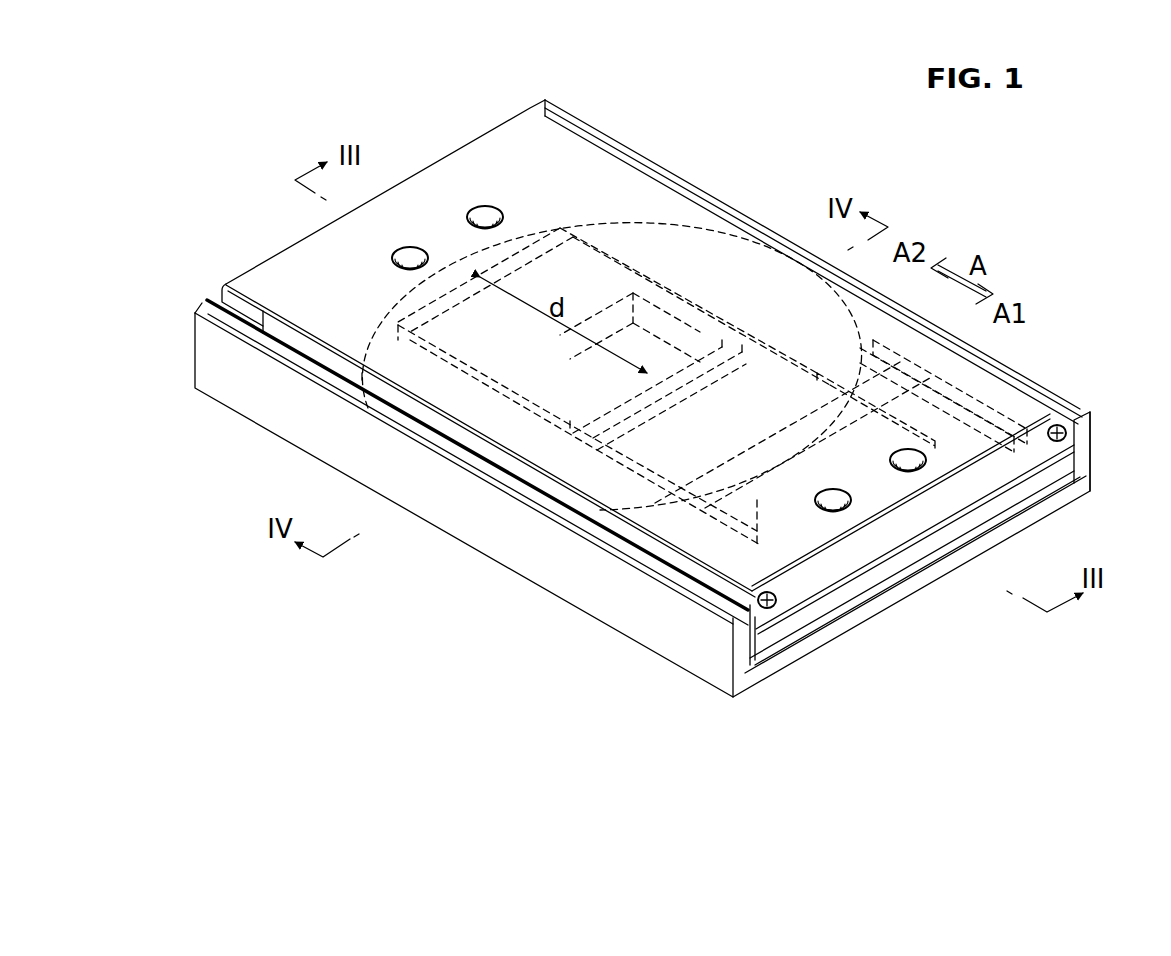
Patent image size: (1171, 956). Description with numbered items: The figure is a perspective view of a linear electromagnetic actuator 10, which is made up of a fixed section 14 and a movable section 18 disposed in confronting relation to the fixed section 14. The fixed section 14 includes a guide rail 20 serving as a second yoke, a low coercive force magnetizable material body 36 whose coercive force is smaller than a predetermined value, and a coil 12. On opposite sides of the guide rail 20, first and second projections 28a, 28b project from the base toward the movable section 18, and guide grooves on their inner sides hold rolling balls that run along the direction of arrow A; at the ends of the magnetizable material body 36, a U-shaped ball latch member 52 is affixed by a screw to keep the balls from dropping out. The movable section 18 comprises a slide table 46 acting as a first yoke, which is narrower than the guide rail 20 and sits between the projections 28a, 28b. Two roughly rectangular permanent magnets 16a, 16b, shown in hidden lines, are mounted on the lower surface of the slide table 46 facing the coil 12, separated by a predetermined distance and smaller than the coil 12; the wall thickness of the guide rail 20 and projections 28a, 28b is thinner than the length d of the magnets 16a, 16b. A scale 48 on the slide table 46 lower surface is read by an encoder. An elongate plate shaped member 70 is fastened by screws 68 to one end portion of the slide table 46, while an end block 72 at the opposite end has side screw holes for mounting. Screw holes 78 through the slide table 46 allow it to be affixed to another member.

The linear electromagnetic actuator 10 is at (845, 112).
The coil 12 is at (507, 440).
The fixed section 14 is at (482, 524).
The permanent magnet 16a is at (588, 262).
The permanent magnet 16b is at (582, 453).
The movable section 18 is at (463, 142).
The guide rail 20 is at (787, 665).
The first projection 28a is at (663, 640).
The second projection 28b is at (1083, 432).
The low coercive force magnetizable material body 36 is at (877, 592).
The slide table 46 is at (668, 200).
The scale 48 is at (905, 362).
The ball latch member 52 is at (1020, 487).
The screw 68 is at (1050, 425).
The plate shaped member 70 is at (1030, 465).
The end block 72 is at (282, 265).
The screw hole 78 is at (485, 222).